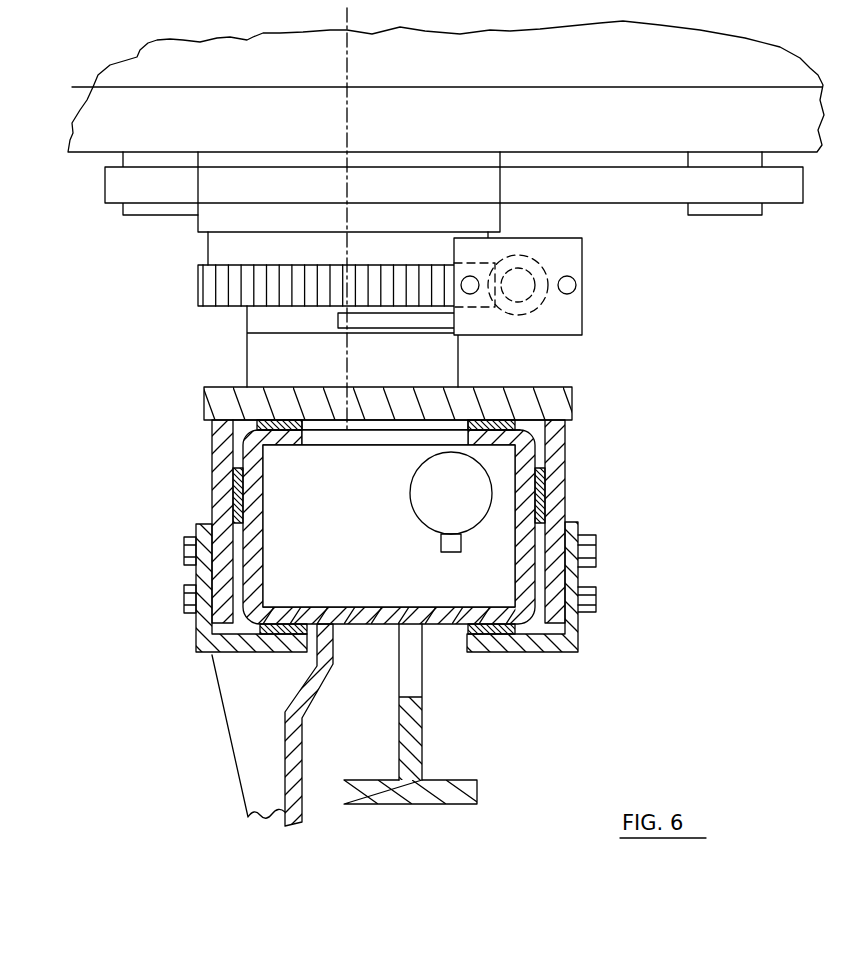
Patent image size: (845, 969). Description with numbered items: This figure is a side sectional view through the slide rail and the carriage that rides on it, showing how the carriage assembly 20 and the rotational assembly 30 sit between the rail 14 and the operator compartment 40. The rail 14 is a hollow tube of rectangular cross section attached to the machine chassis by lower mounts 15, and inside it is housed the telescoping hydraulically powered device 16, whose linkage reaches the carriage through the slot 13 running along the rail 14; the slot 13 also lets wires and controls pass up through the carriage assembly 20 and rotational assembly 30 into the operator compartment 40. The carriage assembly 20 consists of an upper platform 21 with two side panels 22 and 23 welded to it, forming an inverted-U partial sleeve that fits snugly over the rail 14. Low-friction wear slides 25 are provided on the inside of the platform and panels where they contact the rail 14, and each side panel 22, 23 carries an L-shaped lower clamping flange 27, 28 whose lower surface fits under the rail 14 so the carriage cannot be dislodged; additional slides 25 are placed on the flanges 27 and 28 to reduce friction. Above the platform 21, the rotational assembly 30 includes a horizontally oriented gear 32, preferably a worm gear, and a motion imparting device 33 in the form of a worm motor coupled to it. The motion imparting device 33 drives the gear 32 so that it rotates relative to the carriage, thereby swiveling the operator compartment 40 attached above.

The slot 13 is at (398, 437).
The rail 14 is at (442, 617).
The lower mounts 15 is at (418, 738).
The telescoping hydraulically powered member 16 is at (435, 500).
The carriage assembly 20 is at (578, 383).
The upper platform 21 is at (487, 393).
The side panel 22 is at (555, 451).
The side panel 23 is at (222, 470).
The wear slides 25 is at (490, 424).
The lower clamping flange 27 is at (565, 643).
The lower clamping flange 28 is at (198, 626).
The rotational assembly 30 is at (607, 291).
The gear 32 is at (214, 290).
The motion imparting device 33 is at (565, 258).
The operator compartment 40 is at (714, 222).